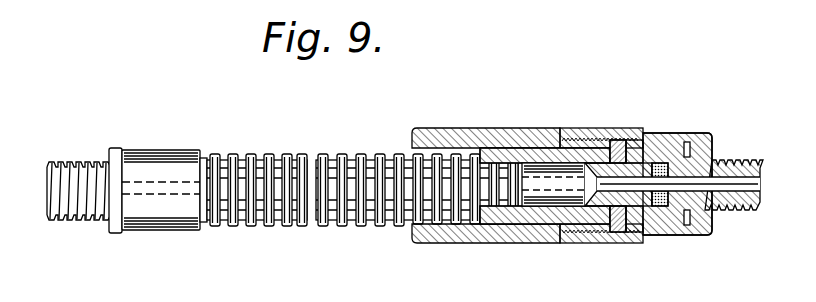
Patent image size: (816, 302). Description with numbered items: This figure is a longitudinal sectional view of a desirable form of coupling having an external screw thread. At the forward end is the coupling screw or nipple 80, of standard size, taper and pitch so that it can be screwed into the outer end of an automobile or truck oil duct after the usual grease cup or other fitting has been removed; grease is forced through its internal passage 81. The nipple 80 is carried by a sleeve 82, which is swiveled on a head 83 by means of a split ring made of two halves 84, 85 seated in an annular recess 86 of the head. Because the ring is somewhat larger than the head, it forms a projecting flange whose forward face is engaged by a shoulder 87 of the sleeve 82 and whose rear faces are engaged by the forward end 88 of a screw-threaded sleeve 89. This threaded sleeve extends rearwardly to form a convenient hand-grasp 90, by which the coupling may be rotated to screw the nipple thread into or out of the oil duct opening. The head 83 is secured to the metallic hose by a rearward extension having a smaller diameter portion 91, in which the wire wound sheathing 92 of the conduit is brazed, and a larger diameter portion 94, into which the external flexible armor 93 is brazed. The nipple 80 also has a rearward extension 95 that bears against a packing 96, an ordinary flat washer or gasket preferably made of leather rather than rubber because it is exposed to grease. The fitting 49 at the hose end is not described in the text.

The threaded coupling fitting 49 is at (180, 150).
The external flexible armor 93 is at (366, 226).
The hand-grasp 90 is at (425, 238).
The screw-threaded sleeve 89 is at (578, 130).
The forward end 88 is at (592, 130).
The larger diameter portion 94 is at (500, 160).
The split ring half 84 is at (623, 130).
The sleeve 82 is at (668, 133).
The head 83 is at (680, 133).
The coupling screw or nipple 80 is at (740, 162).
The internal passage 81 is at (758, 187).
The rearward extension 95 is at (703, 222).
The packing 96 is at (672, 238).
The shoulder 87 is at (652, 236).
The split ring half 85 is at (618, 232).
The annular recess 86 is at (600, 232).
The smaller diameter portion 91 is at (548, 222).
The wire wound sheathing 92 is at (538, 200).